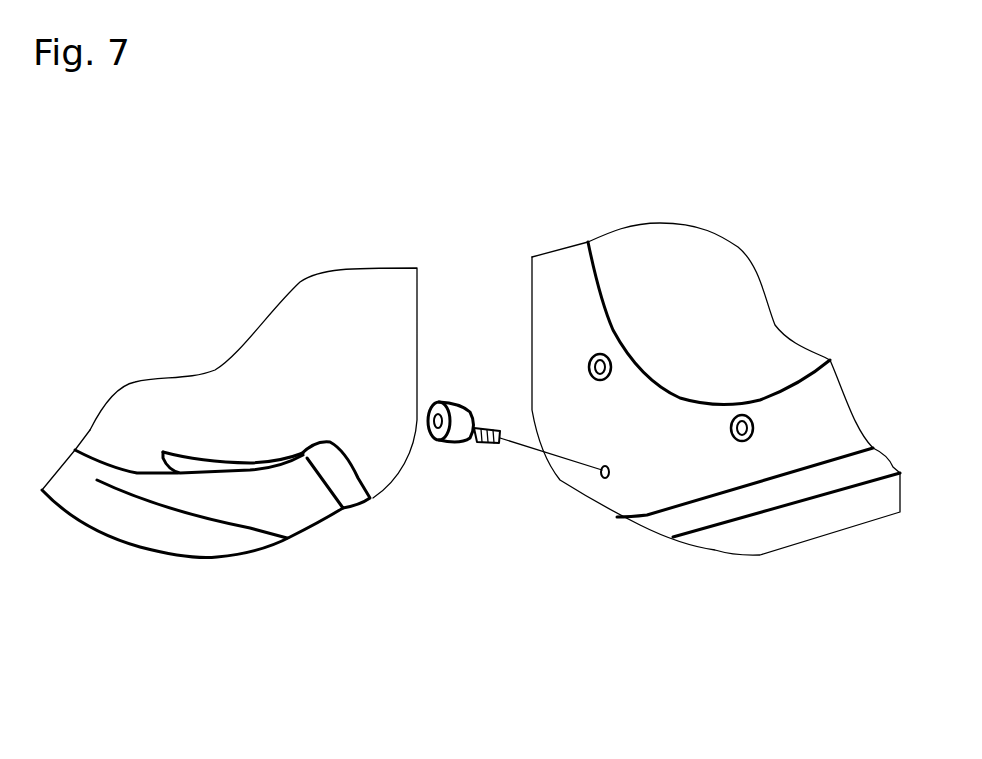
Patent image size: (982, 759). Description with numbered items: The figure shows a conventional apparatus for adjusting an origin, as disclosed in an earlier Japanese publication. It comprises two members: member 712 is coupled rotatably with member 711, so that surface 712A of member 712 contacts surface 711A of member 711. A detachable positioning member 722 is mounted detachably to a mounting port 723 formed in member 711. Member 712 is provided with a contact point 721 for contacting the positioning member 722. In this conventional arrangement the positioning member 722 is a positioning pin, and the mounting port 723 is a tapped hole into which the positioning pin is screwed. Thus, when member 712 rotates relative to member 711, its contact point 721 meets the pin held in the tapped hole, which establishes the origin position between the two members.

The member 711 is at (705, 413).
The surface 711A is at (552, 280).
The member 712 is at (229, 420).
The surface 712A is at (341, 318).
The contact point 721 is at (338, 473).
The detachable positioning member 722 is at (457, 445).
The mounting port 723 is at (603, 480).